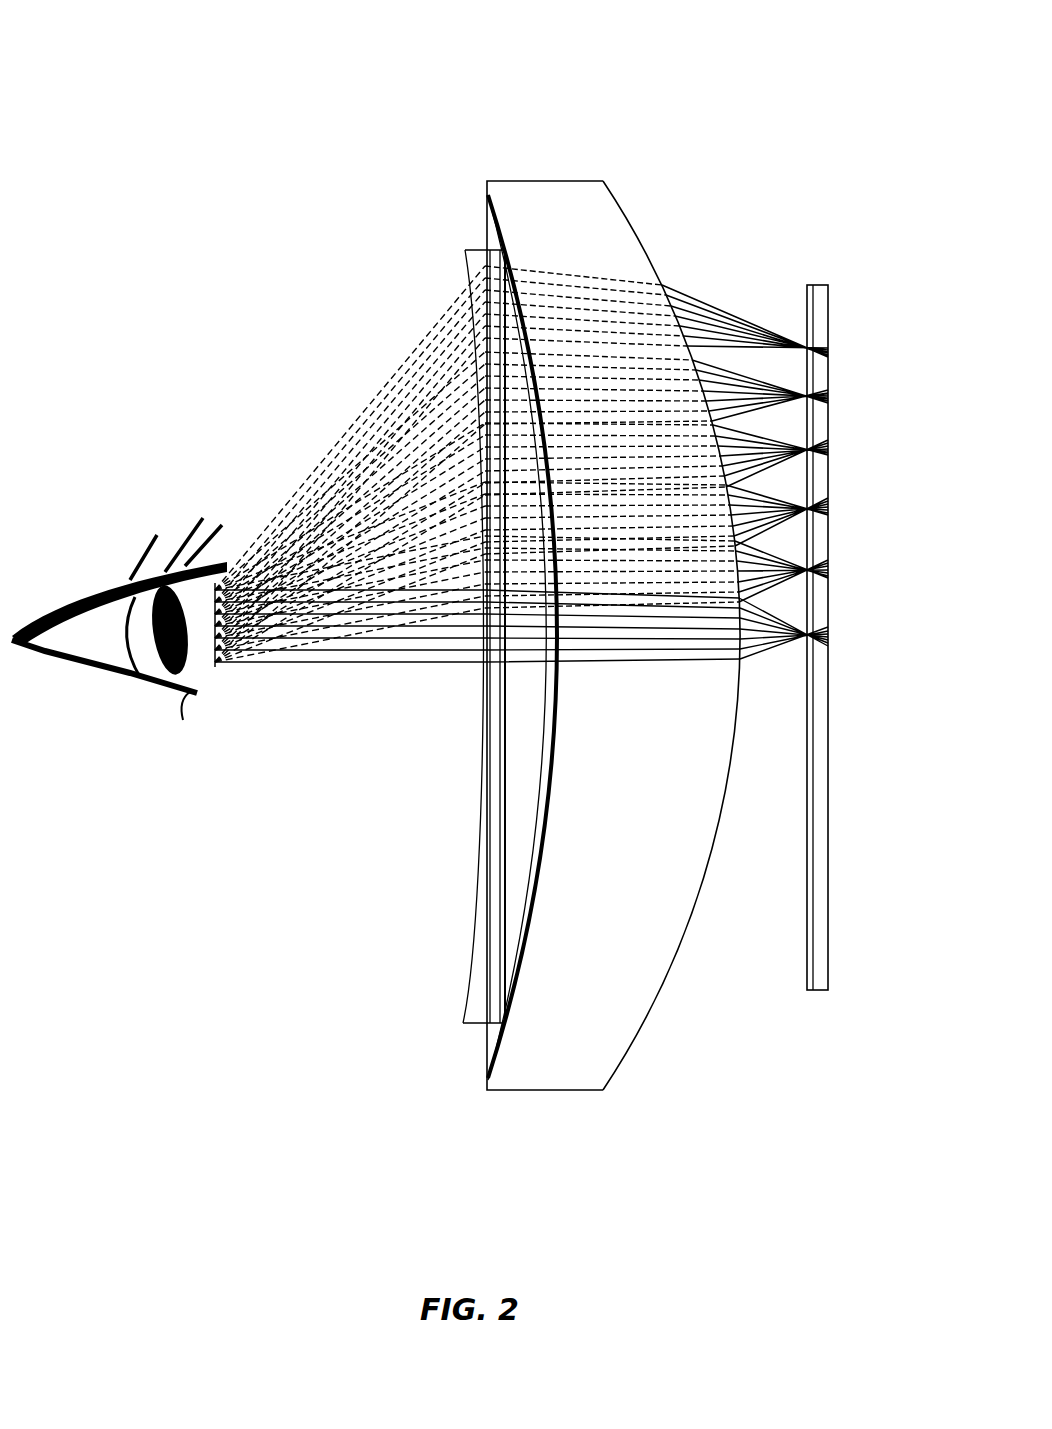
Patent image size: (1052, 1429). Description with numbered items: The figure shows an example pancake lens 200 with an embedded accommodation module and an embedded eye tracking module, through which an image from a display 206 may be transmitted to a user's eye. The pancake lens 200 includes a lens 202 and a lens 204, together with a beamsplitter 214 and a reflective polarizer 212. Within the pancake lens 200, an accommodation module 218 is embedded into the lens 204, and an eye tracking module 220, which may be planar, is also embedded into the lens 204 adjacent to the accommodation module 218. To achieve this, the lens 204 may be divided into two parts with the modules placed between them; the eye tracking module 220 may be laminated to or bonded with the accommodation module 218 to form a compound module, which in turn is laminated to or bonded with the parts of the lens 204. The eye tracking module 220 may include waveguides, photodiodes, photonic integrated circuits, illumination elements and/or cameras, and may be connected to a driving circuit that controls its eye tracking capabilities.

The pancake lens 200 is at (100, 82).
The lens 202 is at (568, 618).
The lens 204 is at (433, 636).
The display 206 is at (828, 832).
The reflective polarizer 212 is at (525, 932).
The beamsplitter 214 is at (640, 1035).
The accommodation module 218 is at (497, 830).
The eye tracking module 220 is at (497, 882).